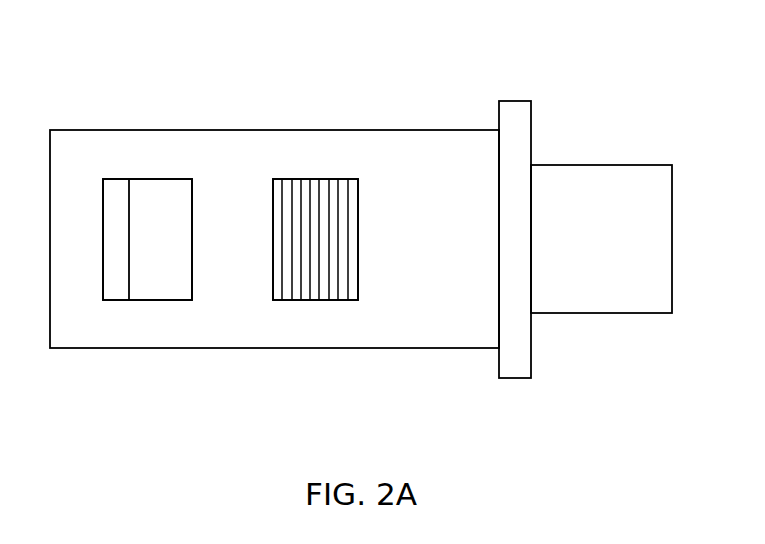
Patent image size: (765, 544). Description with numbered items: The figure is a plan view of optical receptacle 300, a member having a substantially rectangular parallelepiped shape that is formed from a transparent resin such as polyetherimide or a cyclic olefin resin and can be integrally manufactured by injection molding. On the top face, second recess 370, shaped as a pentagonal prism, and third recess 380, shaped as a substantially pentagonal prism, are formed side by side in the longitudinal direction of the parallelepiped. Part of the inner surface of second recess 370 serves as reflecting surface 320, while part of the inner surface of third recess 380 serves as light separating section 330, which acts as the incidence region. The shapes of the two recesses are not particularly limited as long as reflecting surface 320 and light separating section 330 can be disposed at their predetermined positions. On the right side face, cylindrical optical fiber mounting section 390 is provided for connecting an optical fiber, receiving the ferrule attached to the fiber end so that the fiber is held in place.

The optical receptacle 300 is at (646, 22).
The reflecting surface 320 is at (155, 293).
The light separating section 330 is at (314, 291).
The second recess 370 is at (147, 166).
The third recess 380 is at (318, 166).
The optical fiber mounting section 390 is at (593, 298).